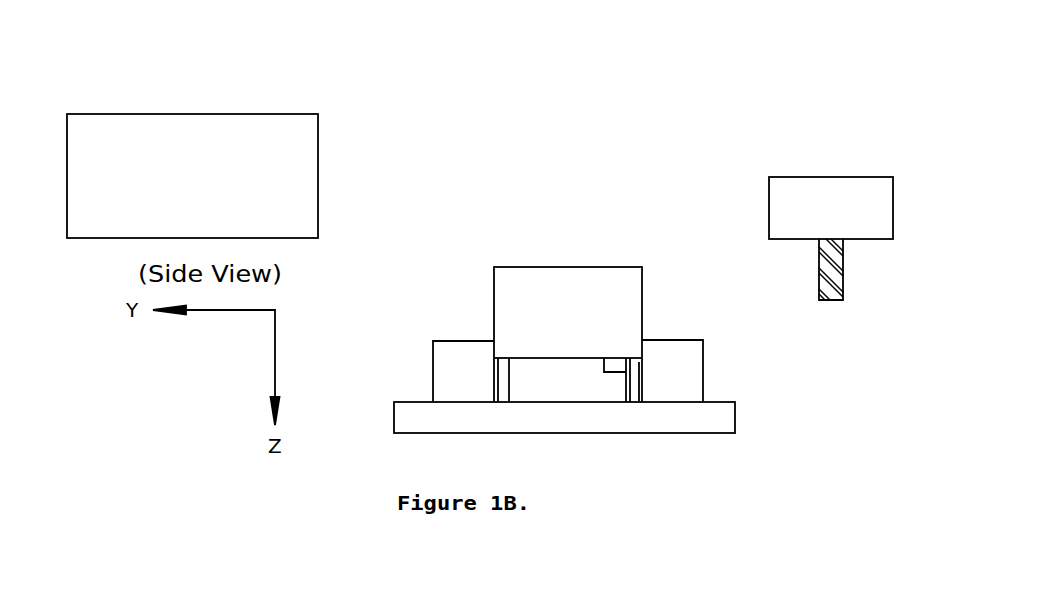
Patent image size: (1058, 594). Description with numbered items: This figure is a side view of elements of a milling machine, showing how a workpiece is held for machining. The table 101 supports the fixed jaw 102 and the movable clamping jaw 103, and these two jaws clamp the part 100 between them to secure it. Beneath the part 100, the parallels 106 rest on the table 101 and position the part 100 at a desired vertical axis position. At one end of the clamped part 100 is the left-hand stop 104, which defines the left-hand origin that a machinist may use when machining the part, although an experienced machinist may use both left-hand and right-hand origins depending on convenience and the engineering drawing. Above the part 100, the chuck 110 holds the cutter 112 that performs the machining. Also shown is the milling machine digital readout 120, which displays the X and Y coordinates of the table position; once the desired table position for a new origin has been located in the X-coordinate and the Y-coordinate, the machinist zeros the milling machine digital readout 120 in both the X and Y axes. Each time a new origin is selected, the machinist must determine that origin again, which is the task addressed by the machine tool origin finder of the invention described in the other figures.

The part 100 is at (567, 293).
The table 101 is at (463, 415).
The fixed jaw 102 is at (683, 365).
The movable clamping jaw 103 is at (453, 373).
The left-hand stop 104 is at (618, 365).
The parallels 106 is at (568, 411).
The chuck 110 is at (800, 203).
The cutter 112 is at (833, 273).
The milling machine digital readout 120 is at (165, 122).